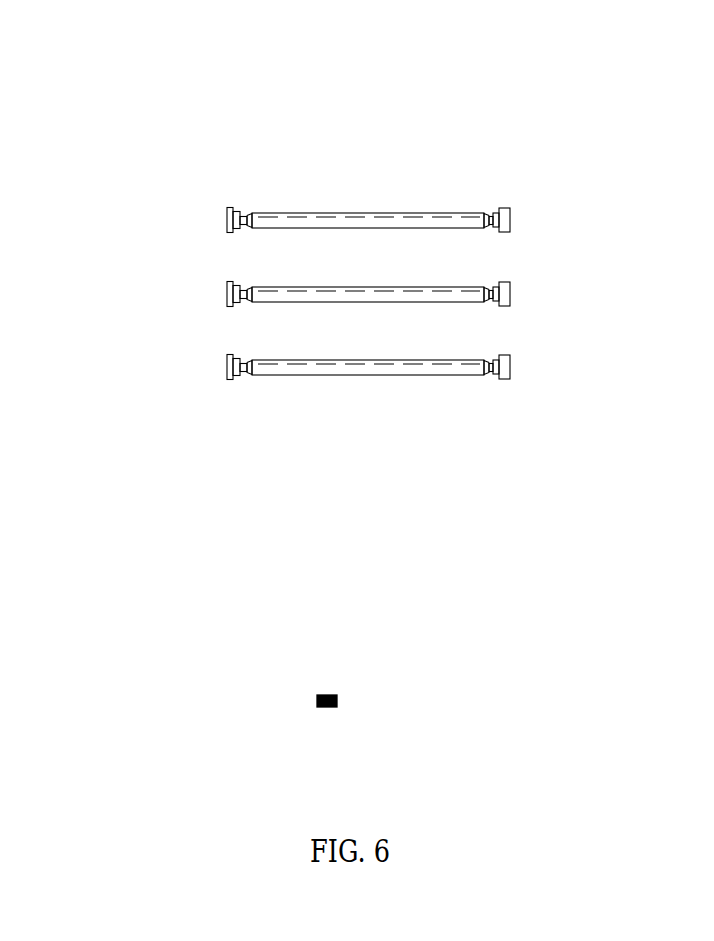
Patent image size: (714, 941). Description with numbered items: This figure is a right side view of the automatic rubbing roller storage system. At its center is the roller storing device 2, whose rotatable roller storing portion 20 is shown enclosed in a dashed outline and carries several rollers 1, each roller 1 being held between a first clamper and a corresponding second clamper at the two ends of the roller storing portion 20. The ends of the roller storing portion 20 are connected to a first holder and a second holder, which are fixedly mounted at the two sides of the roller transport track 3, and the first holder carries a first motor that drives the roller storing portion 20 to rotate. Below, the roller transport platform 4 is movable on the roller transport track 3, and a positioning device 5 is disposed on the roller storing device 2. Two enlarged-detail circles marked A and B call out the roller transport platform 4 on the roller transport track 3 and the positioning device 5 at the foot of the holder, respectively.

The roller storing portion 20 is at (352, 232).
The roller 1 is at (368, 222).
The roller storing device 2 is at (576, 226).
The roller transport track 3 is at (403, 755).
The roller transport platform 4 is at (289, 749).
The positioning device 5 is at (227, 580).
The detail A is at (366, 625).
The detail B is at (149, 671).